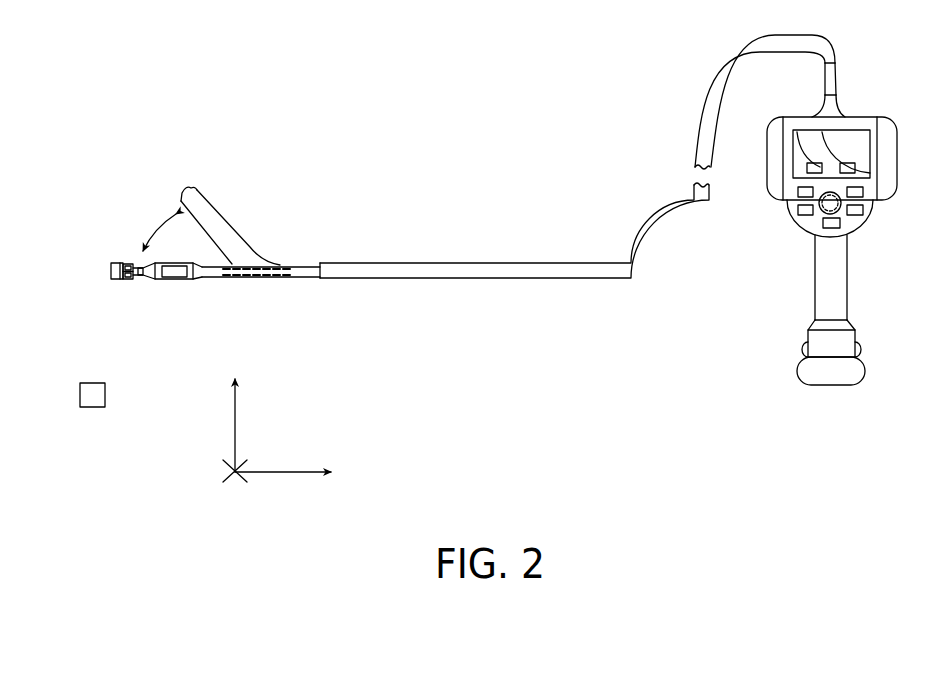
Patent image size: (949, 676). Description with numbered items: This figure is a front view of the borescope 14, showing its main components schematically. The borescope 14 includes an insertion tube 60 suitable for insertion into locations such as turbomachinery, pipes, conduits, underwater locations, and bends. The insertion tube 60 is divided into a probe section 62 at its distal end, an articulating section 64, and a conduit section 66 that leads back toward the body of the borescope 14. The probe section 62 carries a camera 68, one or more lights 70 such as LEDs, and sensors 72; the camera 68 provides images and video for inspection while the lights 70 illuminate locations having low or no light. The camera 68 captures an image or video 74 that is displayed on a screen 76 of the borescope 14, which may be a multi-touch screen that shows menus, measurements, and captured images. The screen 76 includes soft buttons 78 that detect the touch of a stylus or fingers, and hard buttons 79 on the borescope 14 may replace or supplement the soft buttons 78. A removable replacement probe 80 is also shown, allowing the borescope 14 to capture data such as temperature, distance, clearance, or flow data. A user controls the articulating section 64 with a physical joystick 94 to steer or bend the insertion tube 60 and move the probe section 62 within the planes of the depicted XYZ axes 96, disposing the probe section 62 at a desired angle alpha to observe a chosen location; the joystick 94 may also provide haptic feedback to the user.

The borescope 14 is at (860, 382).
The insertion tube 60 is at (226, 156).
The probe section 62 is at (212, 290).
The articulating section 64 is at (303, 290).
The conduit section 66 is at (695, 290).
The camera 68 is at (141, 264).
The lights 70 is at (124, 262).
The sensors 72 is at (175, 271).
The image or video 74 is at (828, 130).
The screen 76 is at (878, 157).
The soft buttons 78 is at (818, 167).
The hard buttons 79 is at (855, 213).
The removable replacement probes 80 is at (109, 289).
The physical joystick 94 is at (832, 204).
The XYZ axes 96 is at (263, 486).